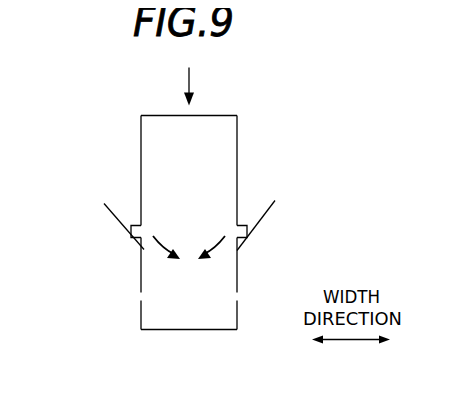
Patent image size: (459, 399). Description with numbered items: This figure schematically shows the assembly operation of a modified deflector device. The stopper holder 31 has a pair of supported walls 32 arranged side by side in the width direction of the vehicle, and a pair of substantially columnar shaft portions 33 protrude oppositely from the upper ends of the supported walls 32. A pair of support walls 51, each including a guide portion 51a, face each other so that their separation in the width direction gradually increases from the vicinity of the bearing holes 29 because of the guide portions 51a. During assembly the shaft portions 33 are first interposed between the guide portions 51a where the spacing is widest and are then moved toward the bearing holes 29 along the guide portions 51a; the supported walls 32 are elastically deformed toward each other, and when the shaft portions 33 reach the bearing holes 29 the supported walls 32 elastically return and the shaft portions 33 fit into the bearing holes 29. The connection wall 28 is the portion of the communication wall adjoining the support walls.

The stopper holder 31 is at (209, 106).
The supported walls 32 is at (133, 127).
The shaft portions 33 is at (122, 216).
The guide portion 51a is at (100, 200).
The support walls 51 is at (133, 258).
The bearing holes 29 is at (131, 292).
The connection wall 28 is at (184, 322).